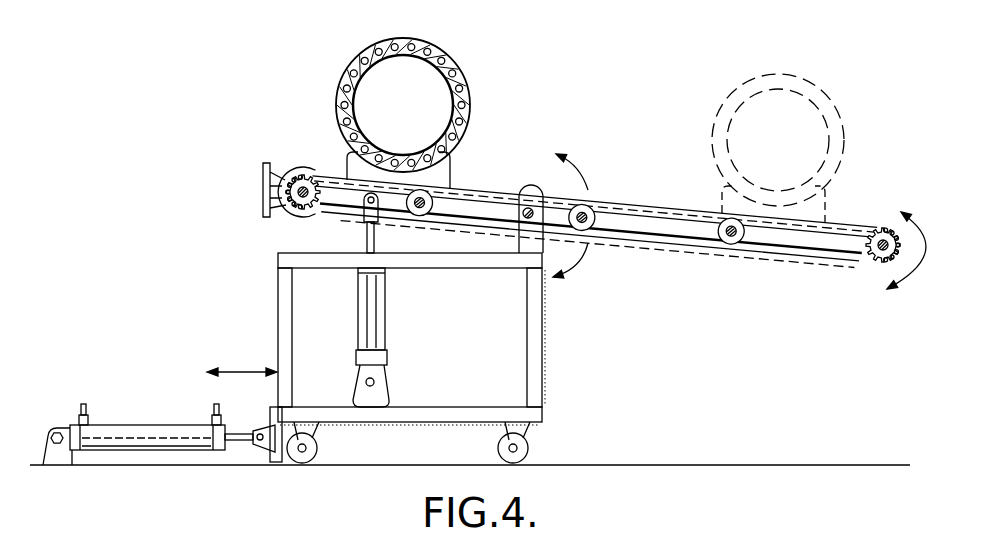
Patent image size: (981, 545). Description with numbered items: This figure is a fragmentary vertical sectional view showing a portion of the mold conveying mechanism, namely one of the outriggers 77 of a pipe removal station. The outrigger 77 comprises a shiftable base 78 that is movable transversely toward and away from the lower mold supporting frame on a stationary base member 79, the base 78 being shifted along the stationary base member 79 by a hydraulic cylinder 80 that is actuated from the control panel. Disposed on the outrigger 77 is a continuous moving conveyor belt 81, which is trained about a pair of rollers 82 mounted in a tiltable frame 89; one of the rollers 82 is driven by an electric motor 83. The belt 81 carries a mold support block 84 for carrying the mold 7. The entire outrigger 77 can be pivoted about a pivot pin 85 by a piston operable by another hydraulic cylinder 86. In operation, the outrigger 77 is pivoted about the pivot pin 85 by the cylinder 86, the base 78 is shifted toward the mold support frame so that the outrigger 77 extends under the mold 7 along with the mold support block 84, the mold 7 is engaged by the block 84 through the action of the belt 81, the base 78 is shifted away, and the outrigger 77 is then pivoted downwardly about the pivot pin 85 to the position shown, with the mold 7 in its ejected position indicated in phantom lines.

The mold 7 is at (466, 82).
The outrigger 77 is at (630, 250).
The shiftable base 78 is at (279, 323).
The stationary base member 79 is at (380, 467).
The hydraulic cylinder 80 is at (175, 425).
The conveyor belt 81 is at (660, 206).
The rollers 82 is at (310, 182).
The electric motor 83 is at (290, 220).
The mold support block 84 is at (443, 176).
The pivot pin 85 is at (530, 208).
The hydraulic cylinder 86 is at (375, 309).
The tiltable frame 89 is at (482, 210).